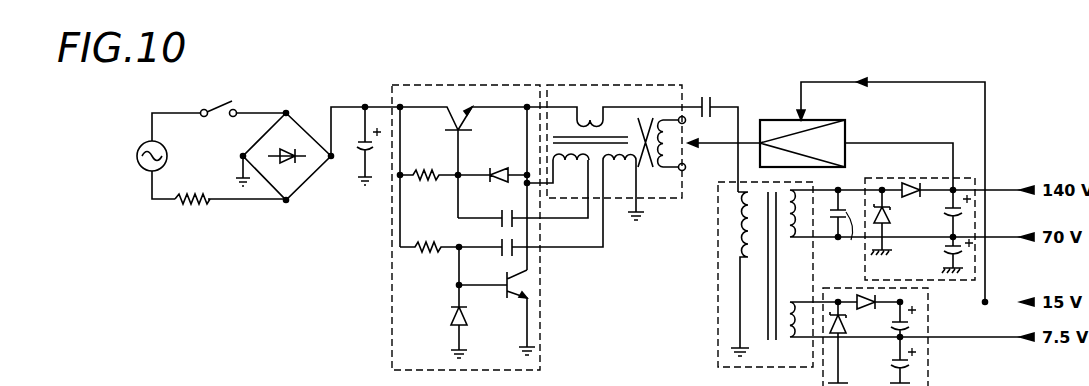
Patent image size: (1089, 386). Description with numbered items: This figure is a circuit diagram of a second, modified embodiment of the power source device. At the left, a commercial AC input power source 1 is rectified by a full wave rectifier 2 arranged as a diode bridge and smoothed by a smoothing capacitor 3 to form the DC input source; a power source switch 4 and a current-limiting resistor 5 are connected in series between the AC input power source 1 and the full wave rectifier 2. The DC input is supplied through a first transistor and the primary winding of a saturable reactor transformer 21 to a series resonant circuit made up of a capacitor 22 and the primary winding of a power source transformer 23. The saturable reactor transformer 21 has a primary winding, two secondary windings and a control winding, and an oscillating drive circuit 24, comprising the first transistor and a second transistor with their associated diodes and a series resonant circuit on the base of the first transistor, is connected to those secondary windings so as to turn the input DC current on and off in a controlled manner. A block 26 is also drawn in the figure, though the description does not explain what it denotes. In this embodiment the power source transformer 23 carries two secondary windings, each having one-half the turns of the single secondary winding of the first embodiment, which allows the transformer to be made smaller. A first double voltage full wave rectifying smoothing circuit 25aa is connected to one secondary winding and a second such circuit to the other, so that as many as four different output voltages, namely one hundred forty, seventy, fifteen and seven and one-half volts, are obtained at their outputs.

The commercial AC input power source 1 is at (138, 145).
The full wave rectifier 2 is at (302, 126).
The smoothing capacitor 3 is at (356, 147).
The power source switch 4 is at (217, 101).
The resistor 5 is at (189, 210).
The saturable reactor transformer 21 is at (614, 85).
The capacitor 22 is at (708, 93).
The power source transformer 23 is at (713, 270).
The oscillating drive circuit 24 is at (463, 85).
The first double voltage full wave rectifying smoothing circuit 25aa is at (931, 178).
The control circuit 26 is at (834, 121).